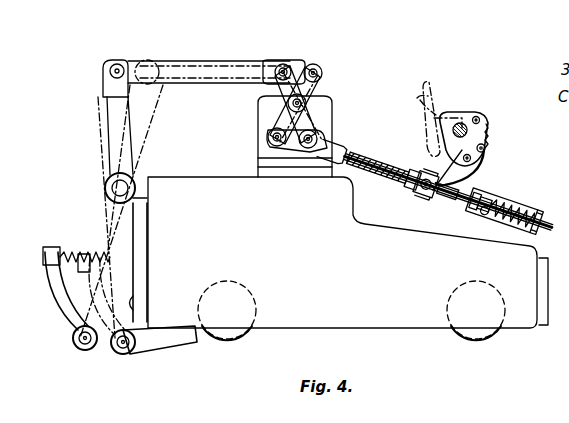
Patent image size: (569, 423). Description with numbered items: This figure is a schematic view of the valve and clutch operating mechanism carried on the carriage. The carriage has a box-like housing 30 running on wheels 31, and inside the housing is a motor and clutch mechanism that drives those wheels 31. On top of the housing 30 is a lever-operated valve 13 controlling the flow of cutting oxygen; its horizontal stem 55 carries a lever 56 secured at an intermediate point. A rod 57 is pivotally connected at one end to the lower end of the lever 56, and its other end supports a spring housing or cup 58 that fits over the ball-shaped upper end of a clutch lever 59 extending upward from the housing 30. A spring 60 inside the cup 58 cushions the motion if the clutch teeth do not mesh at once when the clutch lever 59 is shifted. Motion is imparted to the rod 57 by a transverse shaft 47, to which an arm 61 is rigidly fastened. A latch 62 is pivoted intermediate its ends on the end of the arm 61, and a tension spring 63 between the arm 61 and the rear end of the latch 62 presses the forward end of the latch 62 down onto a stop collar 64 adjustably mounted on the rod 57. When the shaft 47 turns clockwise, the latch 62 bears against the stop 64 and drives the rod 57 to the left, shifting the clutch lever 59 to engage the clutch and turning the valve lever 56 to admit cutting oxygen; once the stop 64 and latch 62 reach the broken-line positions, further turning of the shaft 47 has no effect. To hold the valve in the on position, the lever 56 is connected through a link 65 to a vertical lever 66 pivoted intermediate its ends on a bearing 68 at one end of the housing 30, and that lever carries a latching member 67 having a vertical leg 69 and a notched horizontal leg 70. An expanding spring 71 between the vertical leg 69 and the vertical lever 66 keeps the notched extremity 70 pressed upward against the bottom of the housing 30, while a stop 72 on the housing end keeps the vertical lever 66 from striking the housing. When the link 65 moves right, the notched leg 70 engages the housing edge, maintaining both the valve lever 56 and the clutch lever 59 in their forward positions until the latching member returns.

The lever-operated valve 13 is at (259, 121).
The carriage housing 30 is at (440, 330).
The wheels 31 is at (242, 333).
The transverse shaft 47 is at (461, 123).
The horizontal stem 55 is at (305, 100).
The lever 56 is at (313, 122).
The rod 57 is at (434, 191).
The spring housing 58 is at (505, 211).
The clutch lever 59 is at (484, 206).
The spring 60 is at (512, 214).
The arm 61 is at (438, 120).
The latch 62 is at (419, 103).
The tension spring 63 is at (490, 130).
The stop collar 64 is at (437, 188).
The link 65 is at (203, 62).
The vertical lever 66 is at (110, 127).
The latching member 67 is at (140, 350).
The bearing 68 is at (105, 188).
The vertical leg 69 is at (75, 322).
The horizontal leg 70 is at (93, 352).
The expanding spring 71 is at (100, 255).
The stop 72 is at (147, 303).